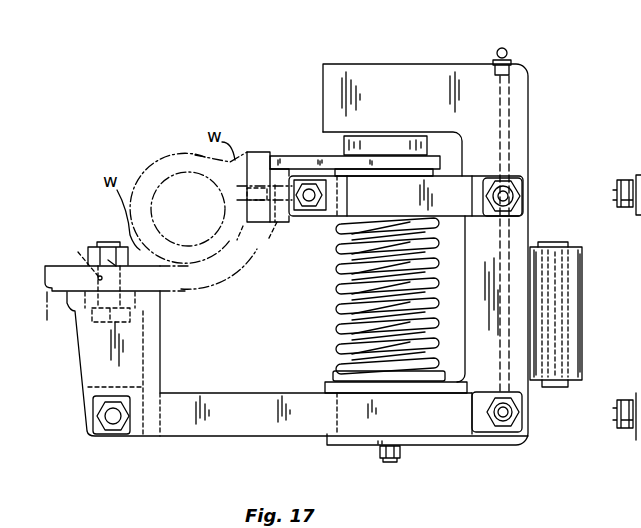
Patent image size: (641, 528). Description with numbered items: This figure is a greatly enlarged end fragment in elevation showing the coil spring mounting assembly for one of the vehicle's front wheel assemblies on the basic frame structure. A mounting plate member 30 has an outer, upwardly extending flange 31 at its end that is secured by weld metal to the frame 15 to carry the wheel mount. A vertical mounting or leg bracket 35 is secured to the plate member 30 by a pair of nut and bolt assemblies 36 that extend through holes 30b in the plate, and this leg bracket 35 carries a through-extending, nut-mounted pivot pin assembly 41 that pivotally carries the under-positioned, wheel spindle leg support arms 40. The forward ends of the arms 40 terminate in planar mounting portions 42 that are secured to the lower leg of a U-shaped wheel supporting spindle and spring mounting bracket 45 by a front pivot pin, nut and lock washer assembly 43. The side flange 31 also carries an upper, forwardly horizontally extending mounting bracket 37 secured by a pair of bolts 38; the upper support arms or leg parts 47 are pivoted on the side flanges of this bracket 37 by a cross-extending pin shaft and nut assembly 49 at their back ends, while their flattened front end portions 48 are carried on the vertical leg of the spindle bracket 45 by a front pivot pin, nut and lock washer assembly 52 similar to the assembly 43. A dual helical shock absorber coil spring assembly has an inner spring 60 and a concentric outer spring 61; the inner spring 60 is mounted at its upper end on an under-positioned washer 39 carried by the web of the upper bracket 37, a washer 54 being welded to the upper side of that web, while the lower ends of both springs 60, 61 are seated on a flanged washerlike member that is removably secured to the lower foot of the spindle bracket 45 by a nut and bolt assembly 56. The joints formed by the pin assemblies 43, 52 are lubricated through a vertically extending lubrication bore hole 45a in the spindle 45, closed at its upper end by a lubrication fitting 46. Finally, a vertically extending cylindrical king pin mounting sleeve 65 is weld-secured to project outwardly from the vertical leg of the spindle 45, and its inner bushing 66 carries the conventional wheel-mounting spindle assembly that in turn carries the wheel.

The frame 15 is at (185, 152).
The mounting plate member 30 is at (115, 306).
The holes 30b is at (72, 258).
The flange 31 is at (262, 152).
The vertical mounting or leg bracket 35 is at (88, 352).
The nut and bolt assemblies 36 is at (113, 243).
The upper mounting or leg bracket 37 is at (288, 156).
The bolts 38 is at (236, 255).
The washer 39 is at (332, 384).
The wheel spindle leg support arms 40 is at (248, 430).
The pivot pin assembly 41 is at (113, 425).
The planar mounting portions 42 is at (485, 430).
The front pivot pin, nut and lock washer assembly 43 is at (508, 425).
The U-shaped wheel supporting spindle and spring mounting bracket 45 is at (416, 64).
The lubrication bore hole 45a is at (510, 100).
The lubrication fitting 46 is at (508, 50).
The upper support arms or leg parts 47 is at (463, 185).
The flattened front end portions 48 is at (490, 212).
The cross-extending pin shaft and nut assembly 49 is at (322, 216).
The front pivot pin, nut and lock washer assembly 52 is at (512, 196).
The washer 54 is at (343, 153).
The nut and bolt assembly 56 is at (400, 462).
The inner spring 60 is at (341, 338).
The outer spring 61 is at (338, 318).
The king pin mounting sleeve 65 is at (583, 318).
The inner bushing 66 is at (573, 275).